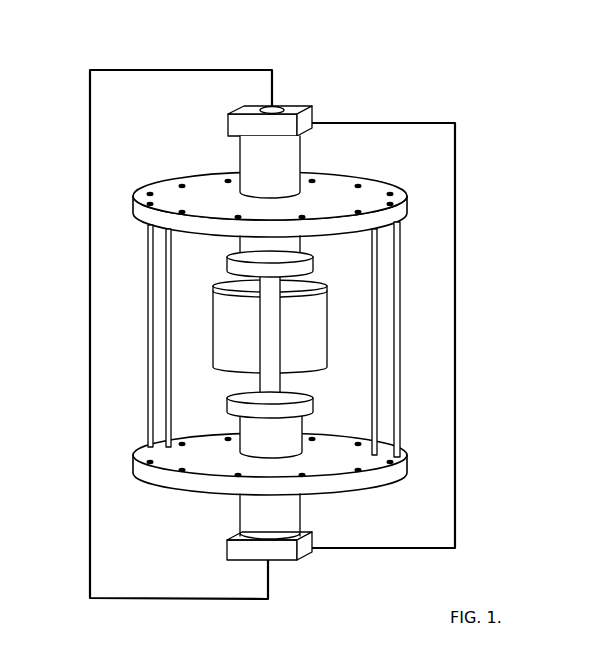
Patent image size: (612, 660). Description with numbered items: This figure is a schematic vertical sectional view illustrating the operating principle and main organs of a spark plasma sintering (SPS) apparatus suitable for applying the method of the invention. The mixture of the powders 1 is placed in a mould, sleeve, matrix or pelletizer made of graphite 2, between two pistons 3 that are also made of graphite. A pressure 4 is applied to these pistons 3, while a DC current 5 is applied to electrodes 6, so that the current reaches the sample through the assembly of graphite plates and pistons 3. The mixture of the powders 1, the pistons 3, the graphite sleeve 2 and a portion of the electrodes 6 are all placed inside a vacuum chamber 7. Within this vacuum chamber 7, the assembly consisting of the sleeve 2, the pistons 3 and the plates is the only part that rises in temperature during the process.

The mixture of the powders 1 is at (278, 327).
The graphite sleeve 2 is at (312, 335).
The pistons 3 is at (273, 303).
The pressure 4 is at (182, 66).
The DC current 5 is at (455, 138).
The electrodes 6 is at (290, 118).
The vacuum chamber 7 is at (160, 262).